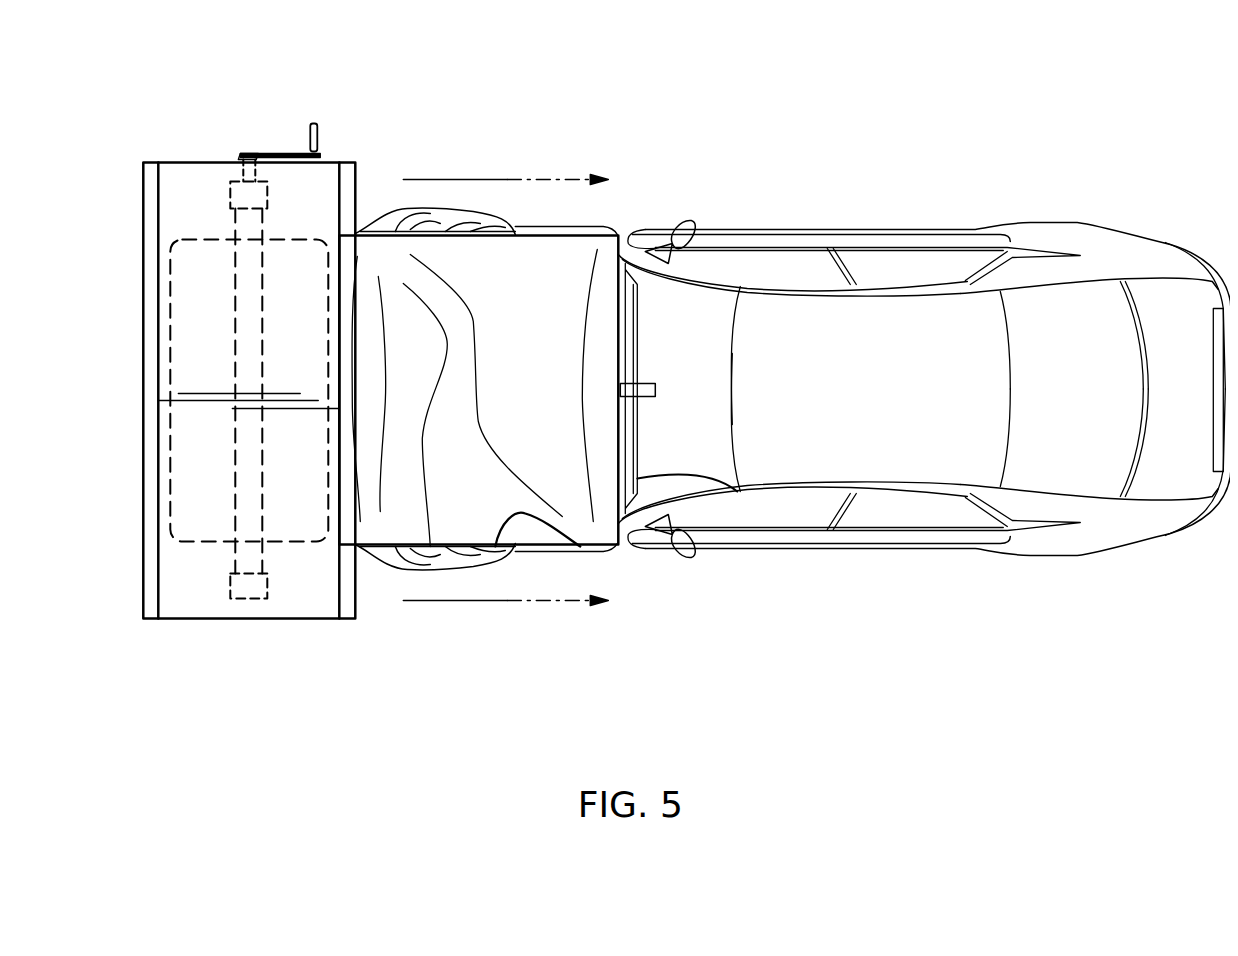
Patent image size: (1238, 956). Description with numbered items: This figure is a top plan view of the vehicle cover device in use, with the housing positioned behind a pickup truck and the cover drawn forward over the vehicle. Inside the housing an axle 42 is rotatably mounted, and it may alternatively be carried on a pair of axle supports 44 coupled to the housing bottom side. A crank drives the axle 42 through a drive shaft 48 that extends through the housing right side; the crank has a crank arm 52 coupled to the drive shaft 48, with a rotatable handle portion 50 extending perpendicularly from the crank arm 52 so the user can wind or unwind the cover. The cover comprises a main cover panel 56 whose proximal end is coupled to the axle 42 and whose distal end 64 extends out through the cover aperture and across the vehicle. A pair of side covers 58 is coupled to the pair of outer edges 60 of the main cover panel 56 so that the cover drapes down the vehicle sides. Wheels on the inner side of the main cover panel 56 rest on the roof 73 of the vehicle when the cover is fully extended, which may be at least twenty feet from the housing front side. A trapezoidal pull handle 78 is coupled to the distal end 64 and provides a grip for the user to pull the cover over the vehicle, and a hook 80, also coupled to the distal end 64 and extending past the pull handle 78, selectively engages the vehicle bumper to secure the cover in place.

The axle 42 is at (345, 547).
The axle supports 44 is at (243, 197).
The drive shaft 48 is at (243, 165).
The rotatable handle portion 50 is at (317, 136).
The crank arm 52 is at (285, 152).
The main cover panel 56 is at (580, 258).
The side covers 58 is at (437, 545).
The outer edges 60 is at (535, 234).
The distal end 64 is at (680, 245).
The roof 73 is at (843, 357).
The pull handle 78 is at (732, 423).
The hook 80 is at (655, 390).